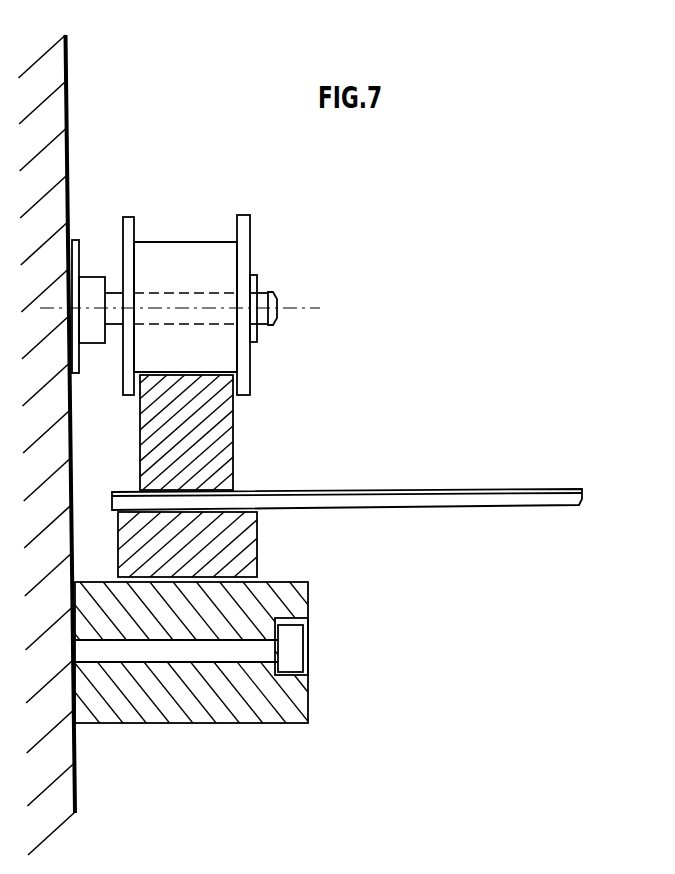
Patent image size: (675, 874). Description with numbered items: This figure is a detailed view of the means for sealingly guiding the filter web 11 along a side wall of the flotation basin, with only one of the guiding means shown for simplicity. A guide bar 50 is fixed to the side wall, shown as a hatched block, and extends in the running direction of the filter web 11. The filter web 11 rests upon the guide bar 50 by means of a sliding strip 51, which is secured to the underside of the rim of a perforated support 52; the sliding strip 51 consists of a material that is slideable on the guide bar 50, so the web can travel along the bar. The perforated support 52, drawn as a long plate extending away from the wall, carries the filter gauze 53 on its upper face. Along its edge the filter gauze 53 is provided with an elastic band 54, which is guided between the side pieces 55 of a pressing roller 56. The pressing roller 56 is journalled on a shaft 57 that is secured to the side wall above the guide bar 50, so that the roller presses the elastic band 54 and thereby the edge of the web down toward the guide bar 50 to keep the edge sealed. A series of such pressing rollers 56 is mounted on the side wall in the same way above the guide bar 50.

The filter web 11 is at (401, 472).
The guide bar 50 is at (300, 717).
The sliding strip 51 is at (245, 545).
The perforated support 52 is at (347, 499).
The filter gauze 53 is at (347, 491).
The elastic band 54 is at (230, 432).
The side pieces 55 is at (186, 284).
The pressing roller 56 is at (240, 214).
The shaft 57 is at (264, 293).